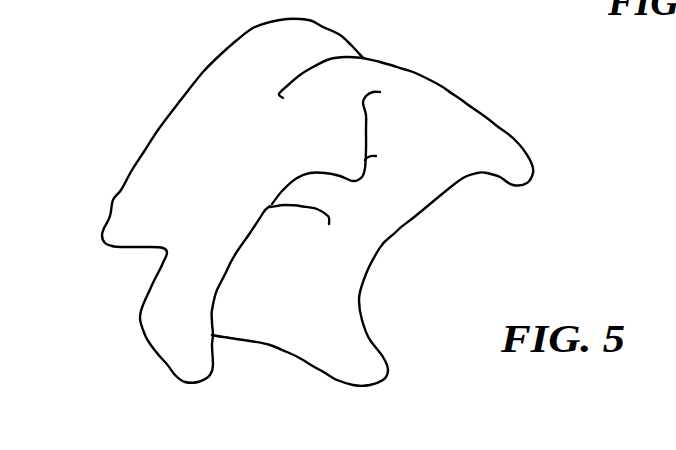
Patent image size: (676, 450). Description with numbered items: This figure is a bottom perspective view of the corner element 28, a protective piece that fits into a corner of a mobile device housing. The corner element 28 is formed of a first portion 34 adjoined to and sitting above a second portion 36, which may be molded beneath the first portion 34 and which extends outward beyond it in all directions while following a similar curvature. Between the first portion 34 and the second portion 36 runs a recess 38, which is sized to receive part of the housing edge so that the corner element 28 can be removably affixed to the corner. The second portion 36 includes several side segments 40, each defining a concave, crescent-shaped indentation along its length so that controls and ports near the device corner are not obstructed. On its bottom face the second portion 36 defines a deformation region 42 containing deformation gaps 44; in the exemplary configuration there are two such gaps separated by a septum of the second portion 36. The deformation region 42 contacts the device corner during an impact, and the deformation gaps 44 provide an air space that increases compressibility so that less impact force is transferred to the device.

The corner element 28 is at (143, 95).
The first portion 34 is at (220, 58).
The second portion 36 is at (371, 385).
The recess 38 is at (163, 251).
The side segments 40 is at (412, 203).
The deformation region 42 is at (305, 242).
The deformation gaps 44 is at (352, 188).